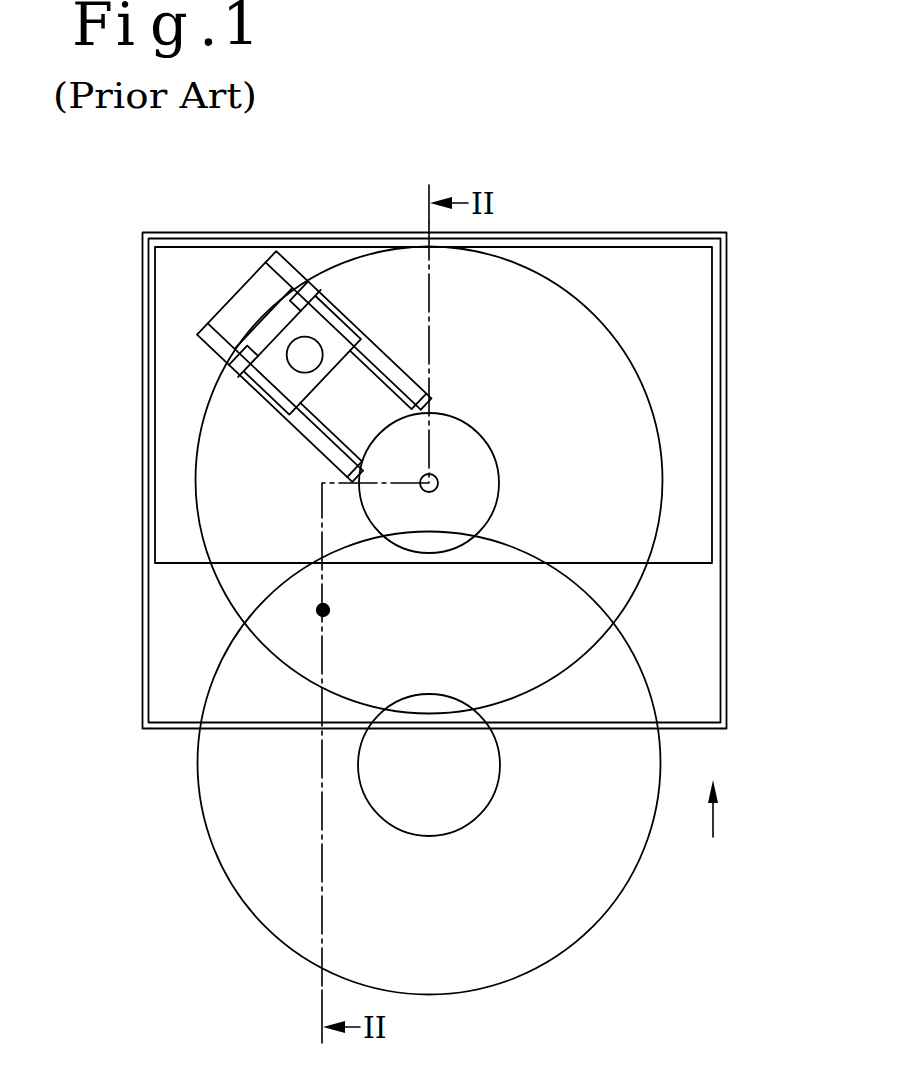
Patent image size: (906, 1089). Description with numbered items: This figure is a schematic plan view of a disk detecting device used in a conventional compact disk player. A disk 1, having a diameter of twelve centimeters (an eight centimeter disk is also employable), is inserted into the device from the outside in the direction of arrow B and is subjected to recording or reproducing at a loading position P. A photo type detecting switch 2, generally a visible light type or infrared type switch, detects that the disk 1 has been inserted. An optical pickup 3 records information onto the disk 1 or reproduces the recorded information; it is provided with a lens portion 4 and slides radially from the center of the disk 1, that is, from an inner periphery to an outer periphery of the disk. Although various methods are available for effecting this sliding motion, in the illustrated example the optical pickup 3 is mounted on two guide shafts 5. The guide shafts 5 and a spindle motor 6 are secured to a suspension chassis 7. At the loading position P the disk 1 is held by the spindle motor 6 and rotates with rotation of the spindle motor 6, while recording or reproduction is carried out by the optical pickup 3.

The disk 1 is at (237, 893).
The photo type detecting switch 2 is at (323, 610).
The optical pickup 3 is at (272, 378).
The lens portion 4 is at (287, 352).
The guide shafts 5 is at (338, 435).
The spindle motor 6 is at (496, 458).
The suspension chassis 7 is at (150, 265).
The loading position P is at (640, 380).
The direction of insertion B is at (713, 829).